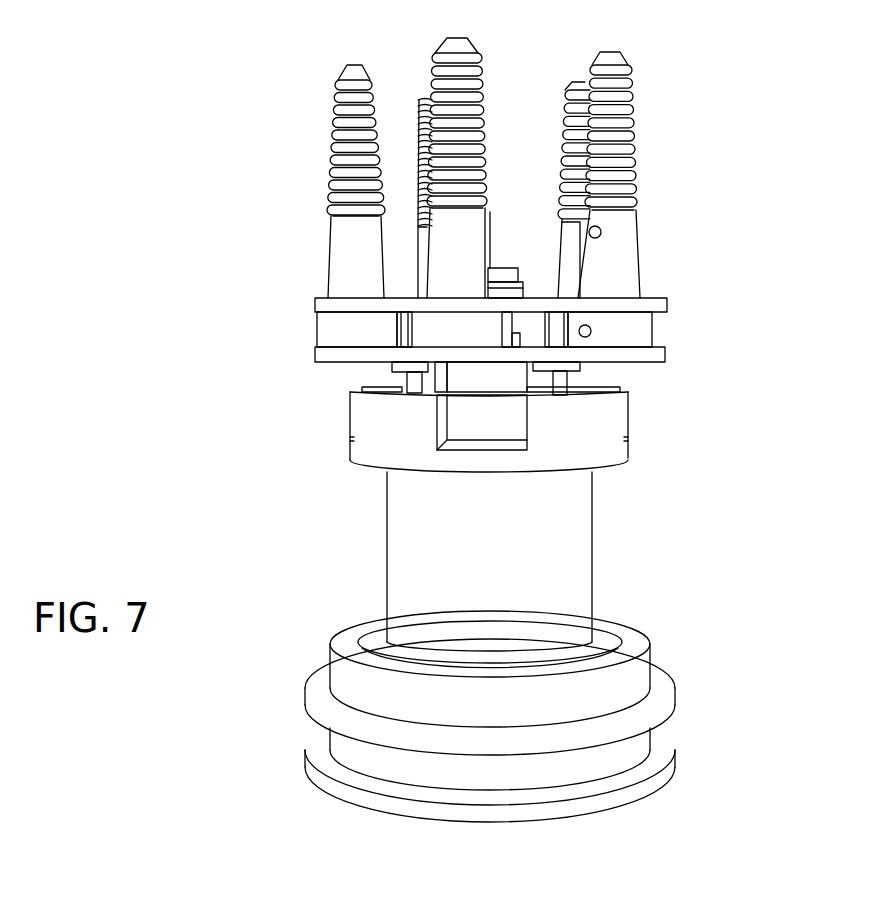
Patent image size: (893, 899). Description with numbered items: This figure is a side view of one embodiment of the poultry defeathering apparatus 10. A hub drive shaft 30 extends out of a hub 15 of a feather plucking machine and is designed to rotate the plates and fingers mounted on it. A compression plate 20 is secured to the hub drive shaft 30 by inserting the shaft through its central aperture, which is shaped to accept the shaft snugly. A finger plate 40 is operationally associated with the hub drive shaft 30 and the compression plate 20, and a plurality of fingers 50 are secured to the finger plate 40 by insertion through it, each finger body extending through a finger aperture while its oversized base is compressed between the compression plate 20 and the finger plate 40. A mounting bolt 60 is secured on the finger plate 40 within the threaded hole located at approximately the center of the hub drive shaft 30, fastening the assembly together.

The poultry defeathering apparatus 10 is at (180, 192).
The hub 15 is at (578, 548).
The compression plate 20 is at (668, 356).
The hub drive shaft 30 is at (492, 380).
The finger plate 40 is at (315, 303).
The fingers 50 is at (333, 115).
The mounting bolt 60 is at (500, 262).